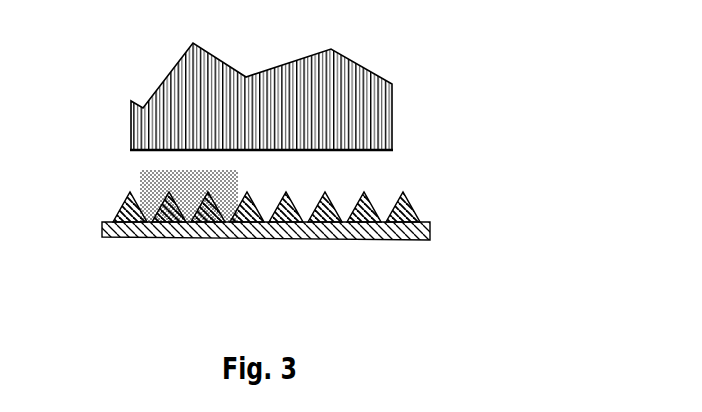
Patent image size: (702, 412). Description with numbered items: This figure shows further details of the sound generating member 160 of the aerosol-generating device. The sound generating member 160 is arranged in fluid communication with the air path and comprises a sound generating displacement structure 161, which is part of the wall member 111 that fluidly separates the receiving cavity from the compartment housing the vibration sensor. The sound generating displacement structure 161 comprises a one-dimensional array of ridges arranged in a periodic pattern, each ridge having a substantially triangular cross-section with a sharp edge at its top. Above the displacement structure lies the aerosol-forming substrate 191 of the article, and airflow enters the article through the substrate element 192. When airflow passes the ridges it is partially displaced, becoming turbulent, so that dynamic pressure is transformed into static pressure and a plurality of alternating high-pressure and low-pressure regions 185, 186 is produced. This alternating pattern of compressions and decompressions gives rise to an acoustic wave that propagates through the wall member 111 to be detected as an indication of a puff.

The wall member 111 is at (104, 225).
The sound generating member 160 is at (337, 239).
The sound generating displacement structure 161 is at (337, 239).
The high-pressure region 185 is at (212, 187).
The low-pressure region 186 is at (232, 188).
The aerosol-forming substrate 191 is at (306, 96).
The substrate element 192 is at (350, 78).